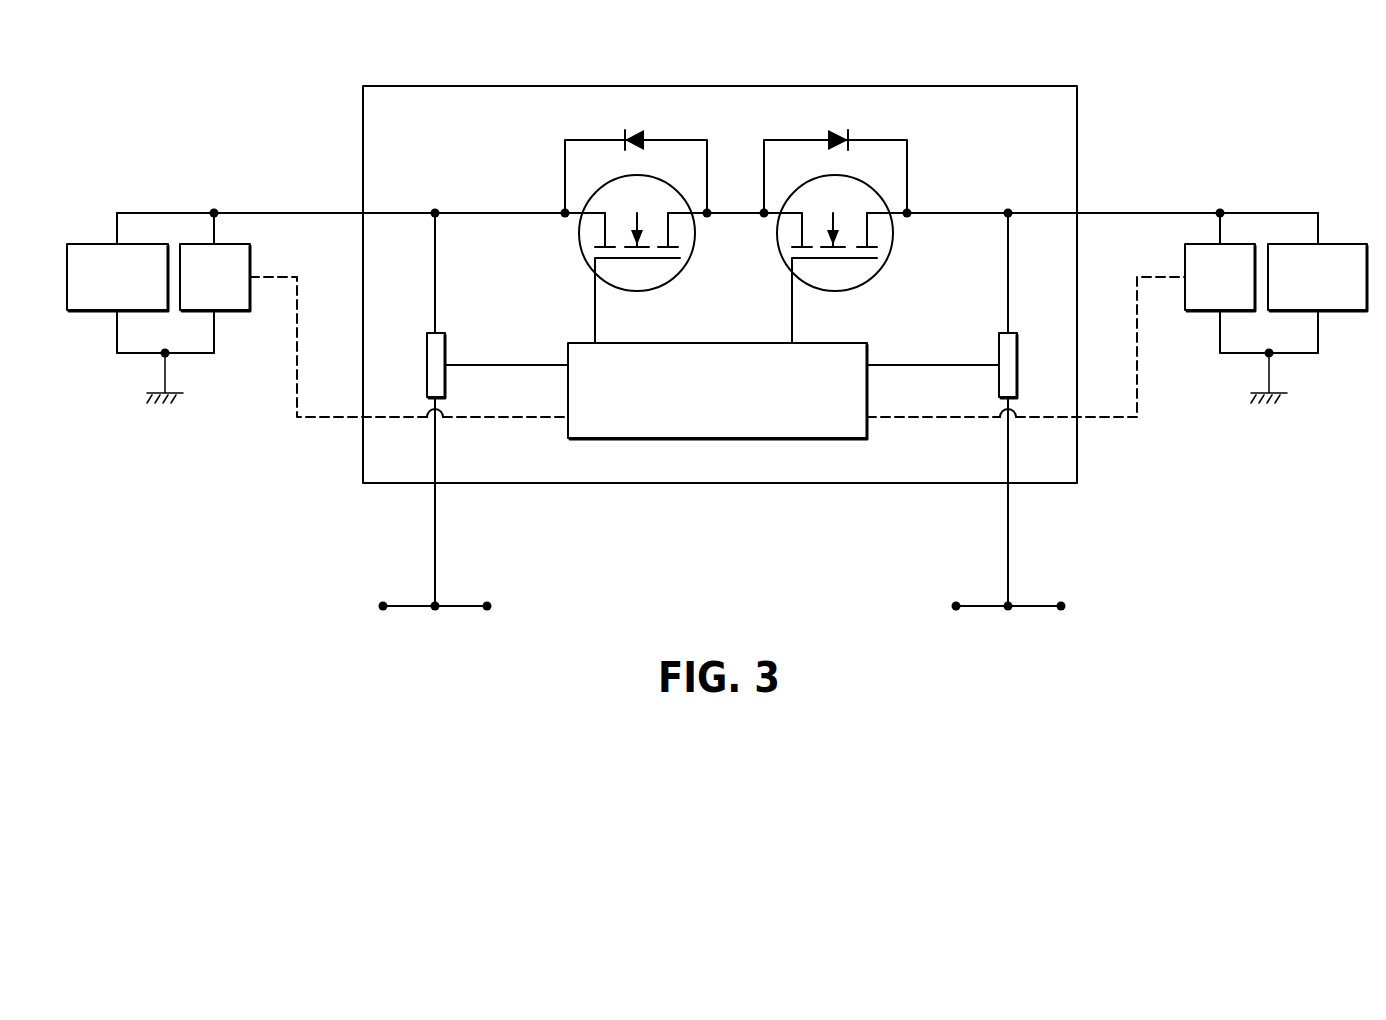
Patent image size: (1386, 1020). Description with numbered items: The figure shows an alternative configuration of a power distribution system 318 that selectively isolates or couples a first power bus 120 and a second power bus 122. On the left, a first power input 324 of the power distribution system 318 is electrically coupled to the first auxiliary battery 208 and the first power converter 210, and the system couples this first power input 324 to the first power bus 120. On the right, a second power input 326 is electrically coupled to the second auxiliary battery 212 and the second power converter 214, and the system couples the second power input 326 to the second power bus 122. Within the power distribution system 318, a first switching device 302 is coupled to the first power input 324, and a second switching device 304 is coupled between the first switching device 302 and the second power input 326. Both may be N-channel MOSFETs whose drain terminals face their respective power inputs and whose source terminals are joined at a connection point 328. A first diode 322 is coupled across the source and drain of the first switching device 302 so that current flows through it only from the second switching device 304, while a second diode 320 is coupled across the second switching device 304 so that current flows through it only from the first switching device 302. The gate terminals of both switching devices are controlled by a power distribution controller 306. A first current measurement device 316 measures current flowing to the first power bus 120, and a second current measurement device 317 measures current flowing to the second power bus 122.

The first power bus 120 is at (410, 606).
The second power bus 122 is at (1032, 606).
The first auxiliary battery 208 is at (95, 312).
The first power converter 210 is at (250, 312).
The second auxiliary battery 212 is at (1343, 312).
The second power converter 214 is at (1206, 312).
The first switching device 302 is at (578, 232).
The second switching device 304 is at (893, 232).
The power distribution controller 306 is at (842, 343).
The first current measurement device 316 is at (445, 350).
The second current measurement device 317 is at (999, 350).
The power distribution system 318 is at (942, 86).
The second diode 320 is at (838, 130).
The first diode 322 is at (636, 130).
The first power input 324 is at (330, 213).
The second power input 326 is at (1092, 213).
The connection point 328 is at (733, 213).